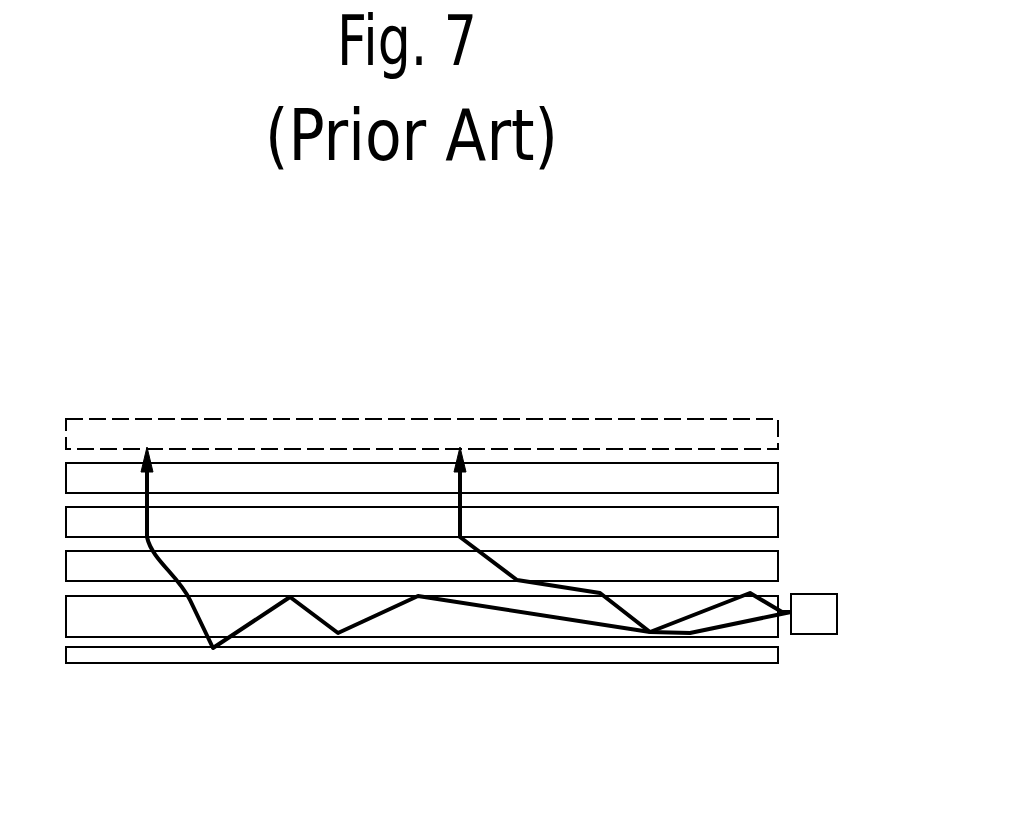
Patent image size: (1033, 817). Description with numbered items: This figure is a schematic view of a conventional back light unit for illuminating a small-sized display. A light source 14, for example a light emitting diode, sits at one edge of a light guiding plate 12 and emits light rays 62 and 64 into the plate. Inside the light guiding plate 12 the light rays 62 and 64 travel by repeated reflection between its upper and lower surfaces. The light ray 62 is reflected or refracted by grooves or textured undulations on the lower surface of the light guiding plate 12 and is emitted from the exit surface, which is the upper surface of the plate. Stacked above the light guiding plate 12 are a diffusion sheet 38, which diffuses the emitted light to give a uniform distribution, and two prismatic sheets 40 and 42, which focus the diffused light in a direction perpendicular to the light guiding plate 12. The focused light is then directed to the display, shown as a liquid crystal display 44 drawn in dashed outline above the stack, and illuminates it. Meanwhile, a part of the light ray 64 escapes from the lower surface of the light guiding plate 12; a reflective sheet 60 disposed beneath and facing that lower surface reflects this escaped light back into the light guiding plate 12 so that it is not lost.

The light guiding plate 12 is at (430, 625).
The light source 14 is at (837, 618).
The diffusion sheet 38 is at (772, 568).
The prismatic sheet 40 is at (778, 523).
The prismatic sheet 42 is at (778, 478).
The liquid crystal display 44 is at (605, 427).
The reflective sheet 60 is at (300, 658).
The light ray 62 is at (715, 610).
The light ray 64 is at (582, 620).